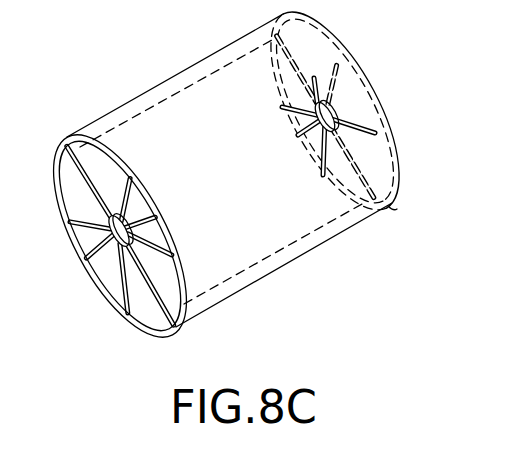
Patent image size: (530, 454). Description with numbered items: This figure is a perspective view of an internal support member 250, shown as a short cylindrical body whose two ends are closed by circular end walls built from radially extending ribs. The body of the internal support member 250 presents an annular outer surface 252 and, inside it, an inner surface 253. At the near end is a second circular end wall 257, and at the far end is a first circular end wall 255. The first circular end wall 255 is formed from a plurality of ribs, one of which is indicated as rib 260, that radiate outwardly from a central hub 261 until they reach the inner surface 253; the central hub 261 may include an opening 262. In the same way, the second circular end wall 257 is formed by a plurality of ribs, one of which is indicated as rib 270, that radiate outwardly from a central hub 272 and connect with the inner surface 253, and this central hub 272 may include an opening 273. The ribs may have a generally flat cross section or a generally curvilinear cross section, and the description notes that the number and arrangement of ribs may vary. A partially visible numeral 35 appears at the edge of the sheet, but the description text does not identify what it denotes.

The shaft 35 is at (11, 92).
The internal support member 250 is at (237, 190).
The annular outer surface 252 is at (352, 231).
The inner surface 253 is at (133, 300).
The first circular end wall 255 is at (374, 100).
The second circular end wall 257 is at (96, 236).
The rib 260 is at (395, 204).
The central hub 261 is at (360, 84).
The opening 262 is at (340, 74).
The rib 270 is at (84, 182).
The central hub 272 is at (141, 257).
The opening 273 is at (96, 276).